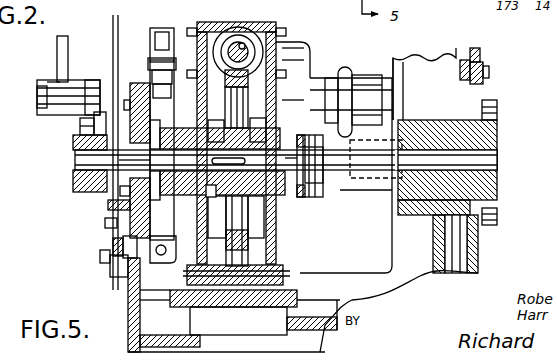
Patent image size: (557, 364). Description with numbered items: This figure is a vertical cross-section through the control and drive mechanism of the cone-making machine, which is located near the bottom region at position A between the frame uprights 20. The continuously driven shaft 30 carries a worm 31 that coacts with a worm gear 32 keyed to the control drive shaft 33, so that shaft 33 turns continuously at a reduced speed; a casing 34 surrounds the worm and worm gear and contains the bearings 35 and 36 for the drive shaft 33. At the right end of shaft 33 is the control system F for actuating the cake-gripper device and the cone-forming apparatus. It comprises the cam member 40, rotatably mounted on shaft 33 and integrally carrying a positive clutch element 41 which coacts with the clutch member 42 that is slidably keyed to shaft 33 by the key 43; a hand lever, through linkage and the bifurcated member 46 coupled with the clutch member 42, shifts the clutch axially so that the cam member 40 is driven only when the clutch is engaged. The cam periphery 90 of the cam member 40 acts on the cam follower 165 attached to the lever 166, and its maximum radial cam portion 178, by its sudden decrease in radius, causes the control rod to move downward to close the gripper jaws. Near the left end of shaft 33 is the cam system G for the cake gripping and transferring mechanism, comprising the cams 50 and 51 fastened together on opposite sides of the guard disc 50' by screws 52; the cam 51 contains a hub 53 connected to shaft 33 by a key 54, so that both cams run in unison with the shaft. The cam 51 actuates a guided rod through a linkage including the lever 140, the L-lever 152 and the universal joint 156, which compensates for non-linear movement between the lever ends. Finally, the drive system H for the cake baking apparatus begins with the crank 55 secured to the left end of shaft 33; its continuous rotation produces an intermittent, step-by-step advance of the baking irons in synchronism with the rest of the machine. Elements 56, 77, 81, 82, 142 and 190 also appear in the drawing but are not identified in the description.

The frame upright 20 is at (457, 68).
The continuously driven shaft 30 is at (238, 50).
The worm 31 is at (243, 38).
The worm gear 32 is at (213, 80).
The control drive shaft 33 is at (80, 156).
The casing 34 is at (198, 26).
The bearing 35 is at (272, 178).
The bearing 36 is at (181, 150).
The cam member 40 is at (500, 128).
The positive clutch element 41 is at (382, 158).
The clutch member 42 is at (328, 195).
The key 43 is at (275, 153).
The bifurcated member 46 is at (312, 198).
The cam 50 is at (107, 211).
The guard disc 50' is at (70, 163).
The cam 51 is at (165, 258).
The screw 52 is at (100, 116).
The hub 53 is at (128, 190).
The key 54 is at (134, 157).
The crank 55 is at (80, 124).
The lever 56 is at (67, 62).
The bracket 77 is at (130, 262).
The rod 81 is at (115, 18).
The stop 82 is at (104, 256).
The cam periphery 90 is at (475, 274).
The lever 140 is at (157, 42).
The plunger 142 is at (150, 55).
The L-lever 152 is at (176, 264).
The universal joint 156 is at (162, 30).
The cam follower 165 is at (483, 64).
The lever 166 is at (465, 60).
The maximum radial cam portion 178 is at (480, 50).
The bolt 190 is at (497, 107).
The control and drive mechanism position A is at (343, 64).
The control system F is at (346, 198).
The cam system G is at (128, 76).
The drive system H is at (46, 80).